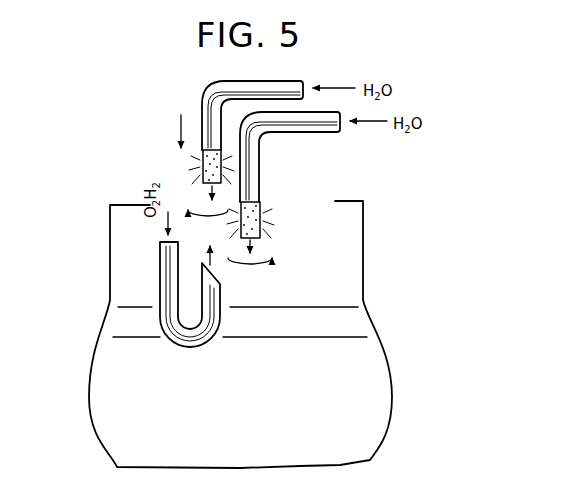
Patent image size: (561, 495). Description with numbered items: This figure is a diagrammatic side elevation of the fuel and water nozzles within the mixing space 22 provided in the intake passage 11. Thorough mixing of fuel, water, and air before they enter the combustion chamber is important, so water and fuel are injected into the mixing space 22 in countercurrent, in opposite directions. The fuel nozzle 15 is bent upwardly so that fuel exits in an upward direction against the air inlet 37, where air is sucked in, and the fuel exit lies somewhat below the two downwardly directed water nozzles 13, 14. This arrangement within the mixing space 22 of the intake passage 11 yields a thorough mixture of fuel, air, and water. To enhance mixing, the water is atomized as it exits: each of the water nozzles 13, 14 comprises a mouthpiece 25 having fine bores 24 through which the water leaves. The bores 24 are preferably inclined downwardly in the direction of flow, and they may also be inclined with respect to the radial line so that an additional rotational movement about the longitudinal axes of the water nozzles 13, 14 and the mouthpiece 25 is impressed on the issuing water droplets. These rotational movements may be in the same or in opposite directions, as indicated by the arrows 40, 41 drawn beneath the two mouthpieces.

The intake passage 11 is at (88, 357).
The water nozzle 13 is at (277, 92).
The water nozzle 14 is at (318, 126).
The fuel nozzle 15 is at (219, 284).
The mixing space 22 is at (246, 409).
The fine bores 24 is at (204, 164).
The mouthpiece 25 is at (262, 213).
The air inlet 37 is at (181, 115).
The arrow 40 is at (208, 218).
The arrow 41 is at (268, 264).